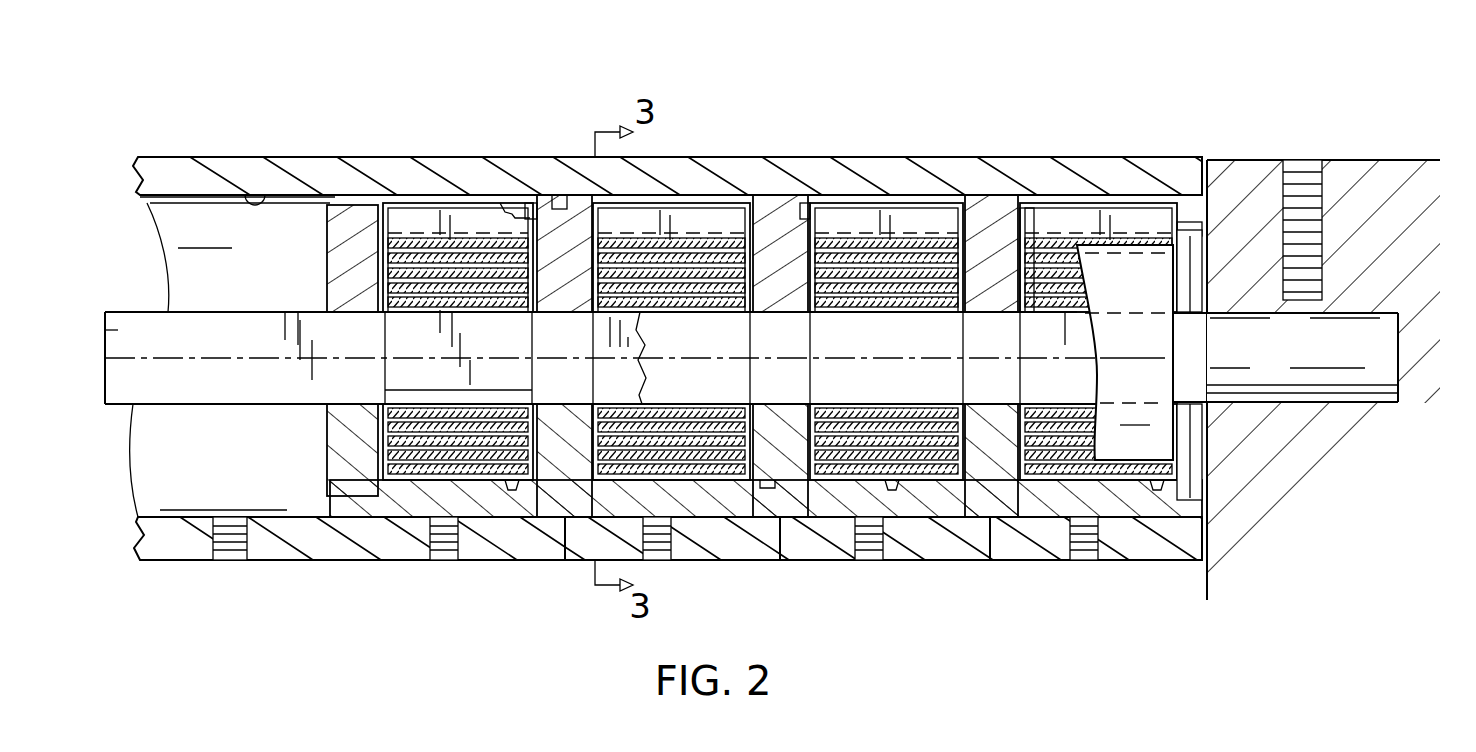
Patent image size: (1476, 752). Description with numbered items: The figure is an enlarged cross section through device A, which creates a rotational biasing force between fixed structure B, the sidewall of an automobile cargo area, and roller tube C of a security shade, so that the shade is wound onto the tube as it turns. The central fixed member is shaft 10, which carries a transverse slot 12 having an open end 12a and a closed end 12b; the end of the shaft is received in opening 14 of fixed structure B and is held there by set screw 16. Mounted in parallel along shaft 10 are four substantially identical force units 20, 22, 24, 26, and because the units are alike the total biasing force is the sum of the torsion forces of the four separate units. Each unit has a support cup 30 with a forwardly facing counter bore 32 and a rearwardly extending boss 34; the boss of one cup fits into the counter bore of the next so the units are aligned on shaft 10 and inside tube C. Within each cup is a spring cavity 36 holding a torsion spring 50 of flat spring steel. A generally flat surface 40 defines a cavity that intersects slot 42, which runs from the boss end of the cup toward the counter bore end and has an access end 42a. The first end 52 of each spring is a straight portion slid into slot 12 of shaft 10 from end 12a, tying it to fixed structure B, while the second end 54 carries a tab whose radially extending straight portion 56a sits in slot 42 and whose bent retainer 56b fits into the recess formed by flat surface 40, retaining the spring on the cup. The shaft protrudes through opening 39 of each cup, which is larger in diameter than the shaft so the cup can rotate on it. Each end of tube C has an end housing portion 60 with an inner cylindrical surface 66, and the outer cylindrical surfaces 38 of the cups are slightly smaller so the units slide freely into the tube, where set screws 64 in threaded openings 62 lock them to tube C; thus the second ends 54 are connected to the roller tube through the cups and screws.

The shaft 10 is at (277, 310).
The transverse slot 12 is at (250, 406).
The open end 12a is at (125, 398).
The closed end 12b is at (1192, 342).
The opening 14 is at (1362, 405).
The set screw 16 is at (1305, 295).
The force unit 20 is at (1048, 519).
The force unit 22 is at (838, 519).
The force unit 24 is at (582, 519).
The force unit 26 is at (388, 519).
The support cup 30 is at (995, 193).
The counter bore 32 is at (778, 490).
The boss 34 is at (335, 502).
The spring cavity 36 is at (590, 412).
The outer cylindrical surface 38 is at (500, 518).
The opening 39 is at (545, 313).
The flat surface 40 is at (515, 210).
The slot 42 is at (527, 215).
The access end 42a is at (560, 205).
The torsion spring 50 is at (512, 482).
The first end 52 is at (395, 332).
The second end 54 is at (1033, 215).
The radially extending straight portion 56a is at (418, 218).
The bent retainer 56b is at (447, 215).
The end housing portion 60 is at (748, 150).
The threaded openings 62 is at (232, 557).
The set screws 64 is at (445, 542).
The inner cylindrical surface 66 is at (258, 197).
The device A is at (845, 183).
The fixed structure B is at (1239, 158).
The roller tube C is at (224, 157).